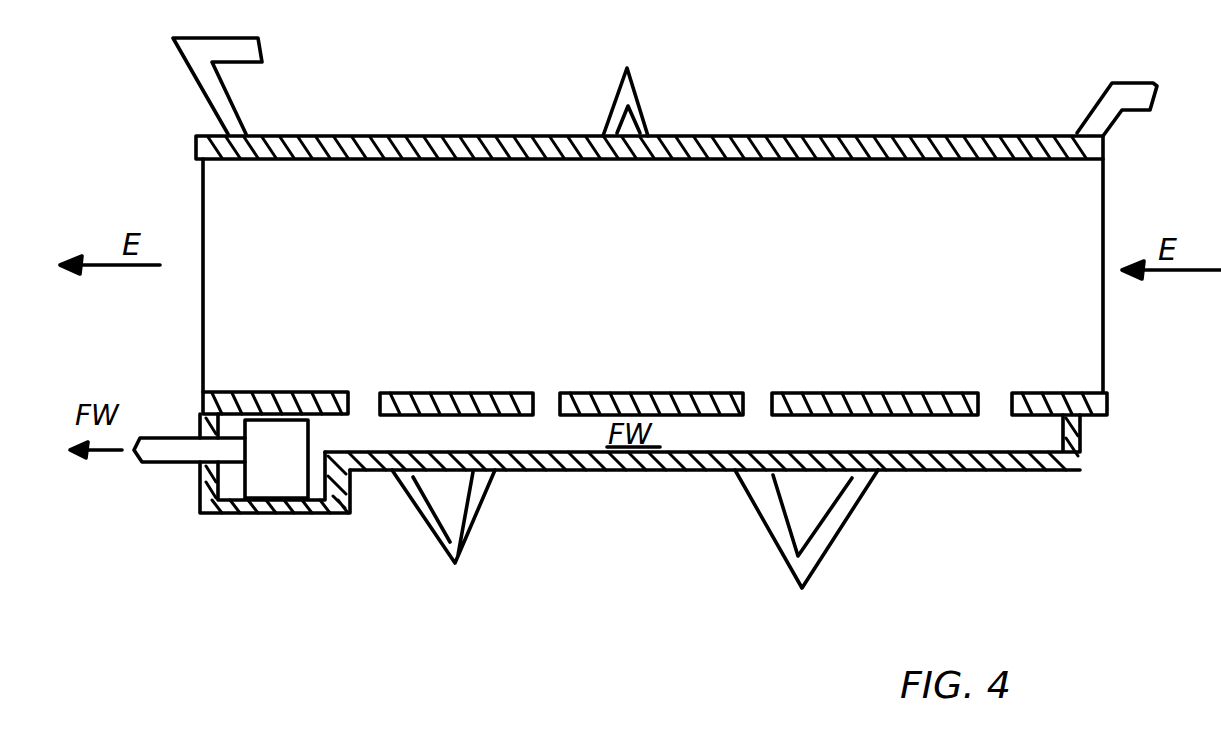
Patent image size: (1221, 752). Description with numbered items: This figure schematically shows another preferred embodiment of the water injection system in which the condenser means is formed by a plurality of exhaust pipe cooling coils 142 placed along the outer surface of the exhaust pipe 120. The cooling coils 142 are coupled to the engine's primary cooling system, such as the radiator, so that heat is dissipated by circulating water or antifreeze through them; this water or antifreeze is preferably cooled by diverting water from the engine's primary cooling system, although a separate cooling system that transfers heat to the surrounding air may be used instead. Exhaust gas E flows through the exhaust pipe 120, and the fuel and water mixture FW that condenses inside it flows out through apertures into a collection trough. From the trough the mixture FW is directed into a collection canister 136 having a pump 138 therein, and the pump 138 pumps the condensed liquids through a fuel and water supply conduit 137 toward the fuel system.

The exhaust pipe 120 is at (765, 137).
The collection canister 136 is at (997, 470).
The fuel and water supply conduit 137 is at (165, 452).
The pump 138 is at (283, 477).
The exhaust pipe cooling coils 142 is at (830, 533).